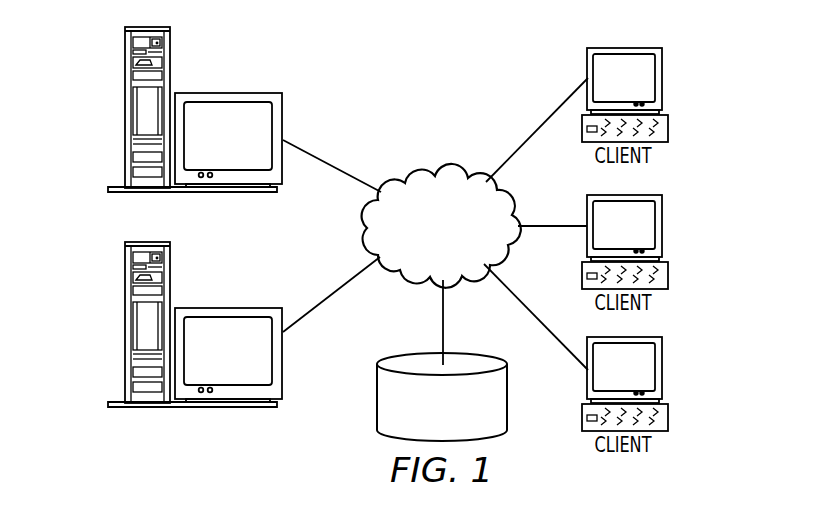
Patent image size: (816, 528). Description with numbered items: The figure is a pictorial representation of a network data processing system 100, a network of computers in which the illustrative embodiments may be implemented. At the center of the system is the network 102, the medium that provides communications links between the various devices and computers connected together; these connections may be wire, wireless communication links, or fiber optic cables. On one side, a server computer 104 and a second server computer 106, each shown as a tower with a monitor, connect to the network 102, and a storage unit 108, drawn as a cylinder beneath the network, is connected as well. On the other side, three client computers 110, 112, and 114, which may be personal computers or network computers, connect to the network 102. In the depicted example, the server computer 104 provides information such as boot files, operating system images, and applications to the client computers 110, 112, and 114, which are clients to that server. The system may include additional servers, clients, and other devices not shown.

The network data processing system 100 is at (492, 71).
The network 102 is at (413, 176).
The server computer 104 is at (125, 110).
The server computer 106 is at (125, 325).
The storage unit 108 is at (377, 408).
The client computer 110 is at (663, 78).
The client computer 112 is at (663, 225).
The client computer 114 is at (663, 367).